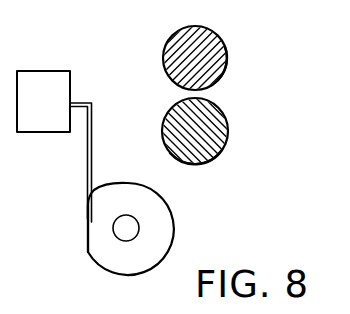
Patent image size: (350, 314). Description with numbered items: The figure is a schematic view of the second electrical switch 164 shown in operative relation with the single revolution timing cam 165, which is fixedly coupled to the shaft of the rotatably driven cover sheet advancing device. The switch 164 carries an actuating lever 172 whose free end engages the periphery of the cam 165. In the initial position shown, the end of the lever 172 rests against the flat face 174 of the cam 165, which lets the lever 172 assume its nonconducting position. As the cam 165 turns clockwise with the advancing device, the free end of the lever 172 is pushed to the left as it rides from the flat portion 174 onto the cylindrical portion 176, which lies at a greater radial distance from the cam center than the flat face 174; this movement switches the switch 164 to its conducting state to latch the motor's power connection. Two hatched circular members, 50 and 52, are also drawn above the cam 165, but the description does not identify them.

The second electrical switch 164 is at (74, 41).
The actuating lever 172 is at (94, 125).
The cylindrical portion 176 is at (135, 183).
The flat face 174 is at (88, 239).
The single revolution timing cam 165 is at (174, 238).
The upper roller 50 is at (228, 65).
The lower roller 52 is at (228, 112).